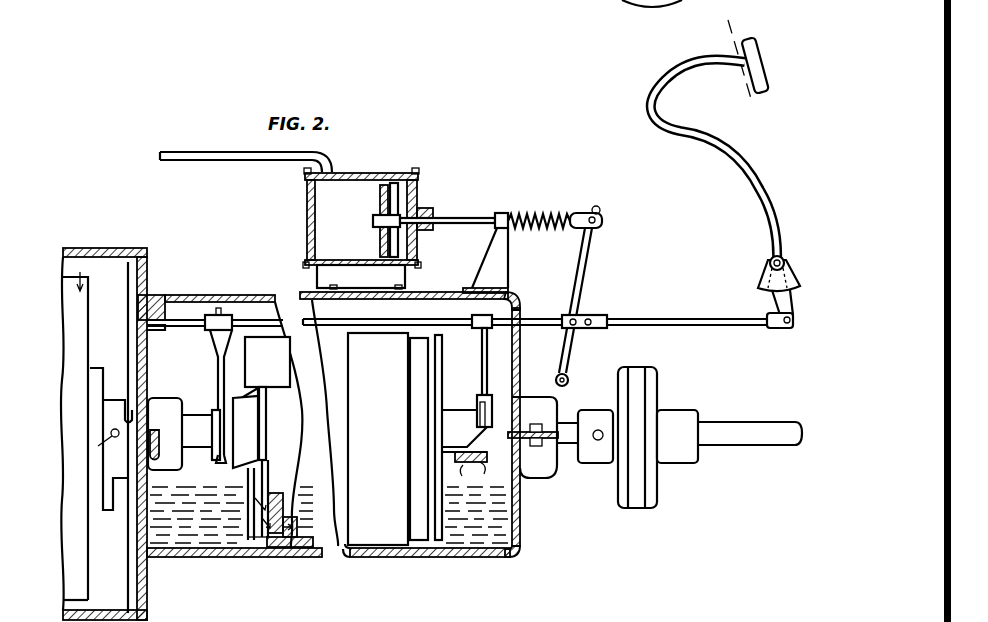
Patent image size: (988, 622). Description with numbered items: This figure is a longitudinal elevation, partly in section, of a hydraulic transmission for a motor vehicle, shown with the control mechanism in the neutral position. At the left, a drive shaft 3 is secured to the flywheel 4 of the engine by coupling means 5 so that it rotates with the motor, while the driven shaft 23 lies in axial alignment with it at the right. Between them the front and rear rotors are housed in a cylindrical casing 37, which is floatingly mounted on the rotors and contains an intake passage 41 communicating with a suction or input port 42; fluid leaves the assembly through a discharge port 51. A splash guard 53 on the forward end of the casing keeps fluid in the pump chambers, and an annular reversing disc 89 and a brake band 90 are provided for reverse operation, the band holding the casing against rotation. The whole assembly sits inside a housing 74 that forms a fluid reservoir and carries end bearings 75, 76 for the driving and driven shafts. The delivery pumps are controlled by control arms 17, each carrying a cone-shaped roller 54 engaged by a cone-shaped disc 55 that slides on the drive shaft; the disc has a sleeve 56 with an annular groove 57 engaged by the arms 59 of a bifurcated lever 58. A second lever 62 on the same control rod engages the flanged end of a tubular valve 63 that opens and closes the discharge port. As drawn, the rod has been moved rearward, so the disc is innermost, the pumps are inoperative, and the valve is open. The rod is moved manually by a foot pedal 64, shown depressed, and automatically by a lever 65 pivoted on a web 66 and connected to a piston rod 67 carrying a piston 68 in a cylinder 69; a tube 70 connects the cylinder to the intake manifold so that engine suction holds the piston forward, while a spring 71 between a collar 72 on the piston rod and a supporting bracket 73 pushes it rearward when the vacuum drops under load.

The shaft 3 is at (131, 405).
The flywheel 4 is at (83, 326).
The coupling means 5 is at (103, 367).
The control arm 17 is at (266, 402).
The driven shaft 23 is at (569, 428).
The cylindrical casing 37 is at (330, 423).
The intake passage 41 is at (297, 553).
The suction or input port 42 is at (270, 553).
The discharge port 51 is at (476, 466).
The splash guard 53 is at (267, 362).
The cone-shaped roller 54 is at (248, 392).
The cone-shaped disc 55 is at (246, 468).
The sleeve 56 is at (216, 460).
The annular groove 57 is at (220, 463).
The bifurcated lever 58 is at (217, 358).
The arms 59 is at (214, 412).
The lever 62 is at (481, 352).
The tubular valve 63 is at (464, 431).
The foot pedal 64 is at (786, 92).
The lever 65 is at (580, 288).
The web 66 is at (557, 380).
The piston rod 67 is at (479, 220).
The piston 68 is at (380, 200).
The cylinder 69 is at (365, 174).
The tube 70 is at (200, 154).
The spring 71 is at (528, 215).
The collar 72 is at (576, 213).
The supporting bracket 73 is at (486, 260).
The housing 74 is at (522, 503).
The end bearing 75 is at (163, 404).
The end bearing 76 is at (560, 474).
The reversing disc 89 is at (455, 382).
The brake band 90 is at (378, 439).